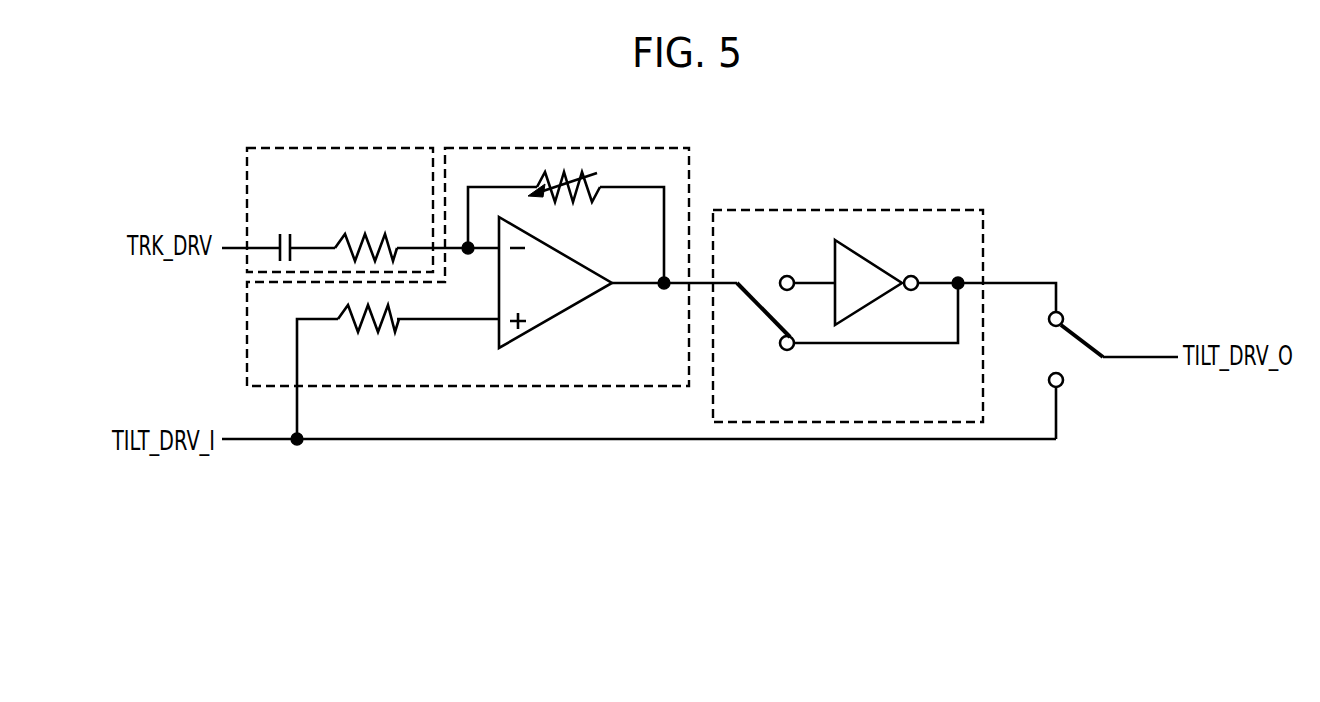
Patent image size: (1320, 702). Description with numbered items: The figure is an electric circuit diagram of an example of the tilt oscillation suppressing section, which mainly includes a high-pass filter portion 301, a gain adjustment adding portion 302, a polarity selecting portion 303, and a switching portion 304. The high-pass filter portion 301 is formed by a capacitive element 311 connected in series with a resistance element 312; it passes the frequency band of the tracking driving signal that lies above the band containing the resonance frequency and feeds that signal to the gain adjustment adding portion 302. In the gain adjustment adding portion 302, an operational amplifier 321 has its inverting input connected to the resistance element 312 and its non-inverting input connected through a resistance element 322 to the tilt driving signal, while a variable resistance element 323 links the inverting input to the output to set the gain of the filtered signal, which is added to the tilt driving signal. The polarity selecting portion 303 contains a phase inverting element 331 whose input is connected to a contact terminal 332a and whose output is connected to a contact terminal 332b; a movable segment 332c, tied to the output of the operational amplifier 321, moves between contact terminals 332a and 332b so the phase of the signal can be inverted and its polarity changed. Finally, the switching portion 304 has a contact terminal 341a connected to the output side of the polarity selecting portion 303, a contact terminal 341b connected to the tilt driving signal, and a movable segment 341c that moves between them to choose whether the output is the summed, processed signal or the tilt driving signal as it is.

The high-pass filter portion 301 is at (292, 148).
The gain adjustment adding portion 302 is at (583, 148).
The polarity selecting portion 303 is at (815, 210).
The switching portion 304 is at (1143, 318).
The capacitive element 311 is at (283, 233).
The resistance element 312 is at (374, 233).
The operational amplifier 321 is at (585, 263).
The resistance element 322 is at (365, 331).
The variable resistance element 323 is at (570, 199).
The phase inverting element 331 is at (872, 261).
The contact terminal 332a is at (786, 276).
The contact terminal 332b is at (790, 351).
The movable segment 332c is at (762, 311).
The contact terminal 341a is at (1063, 316).
The contact terminal 341b is at (1064, 380).
The movable segment 341c is at (1088, 345).